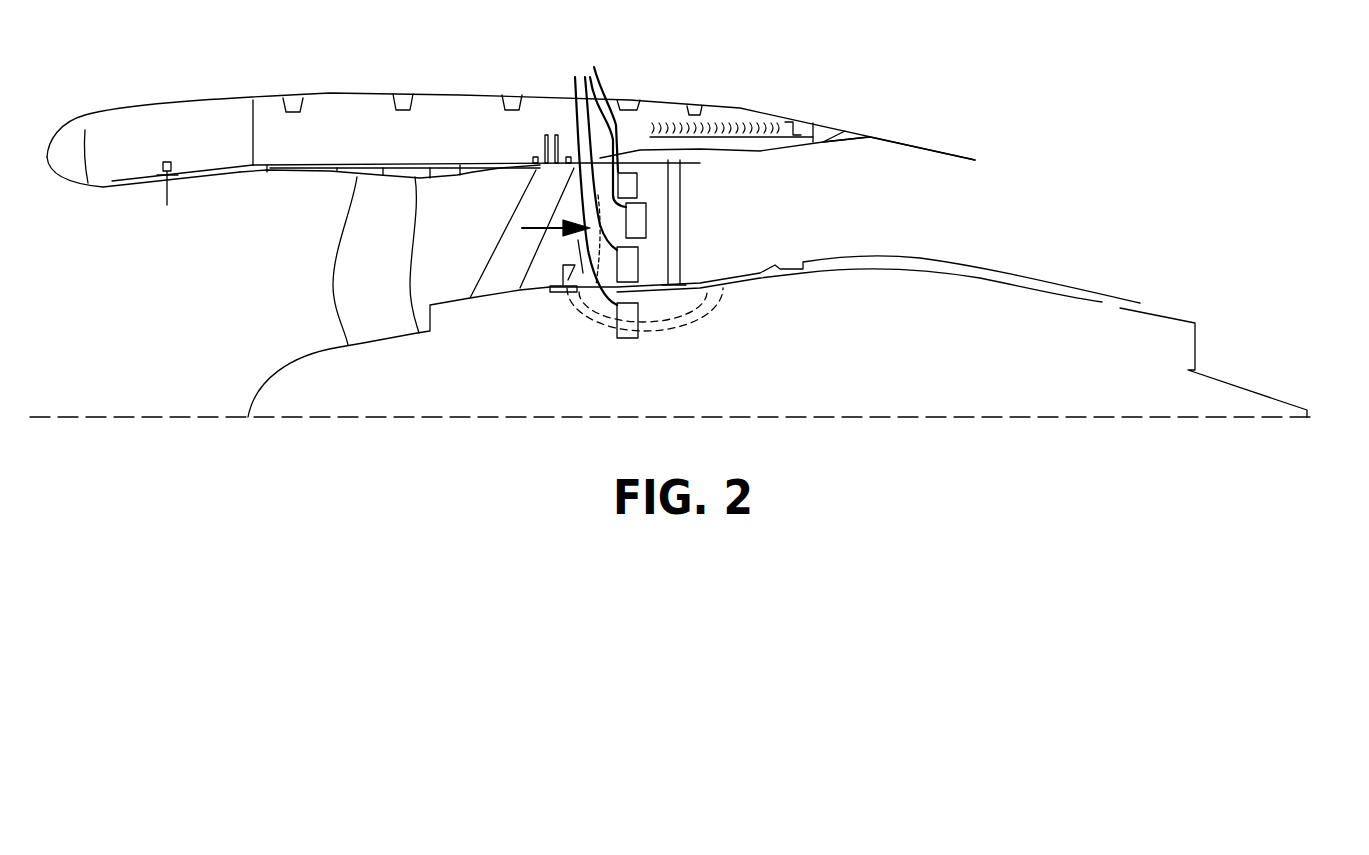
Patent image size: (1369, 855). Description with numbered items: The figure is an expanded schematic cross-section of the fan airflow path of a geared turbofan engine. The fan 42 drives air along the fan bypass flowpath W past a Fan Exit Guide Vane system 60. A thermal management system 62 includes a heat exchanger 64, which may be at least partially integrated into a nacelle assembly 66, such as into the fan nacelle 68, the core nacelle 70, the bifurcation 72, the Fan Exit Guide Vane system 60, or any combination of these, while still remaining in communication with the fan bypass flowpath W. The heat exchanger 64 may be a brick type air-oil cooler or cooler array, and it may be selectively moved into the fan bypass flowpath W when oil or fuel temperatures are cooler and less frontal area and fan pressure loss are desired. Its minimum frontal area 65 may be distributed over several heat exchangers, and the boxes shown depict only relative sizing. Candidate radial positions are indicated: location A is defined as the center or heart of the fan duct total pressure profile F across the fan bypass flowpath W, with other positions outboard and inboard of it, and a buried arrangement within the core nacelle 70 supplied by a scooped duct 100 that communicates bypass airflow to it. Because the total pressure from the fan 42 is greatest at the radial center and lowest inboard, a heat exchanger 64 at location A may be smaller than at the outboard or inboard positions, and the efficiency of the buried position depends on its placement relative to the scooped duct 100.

The fan 42 is at (388, 271).
The Fan Exit Guide Vane system 60 is at (537, 192).
The thermal management system 62 is at (645, 113).
The heat exchanger 64 is at (640, 258).
The minimum frontal area 65 is at (595, 175).
The nacelle assembly 66 is at (827, 83).
The fan nacelle 68 is at (715, 127).
The core nacelle 70 is at (818, 336).
The bifurcation 72 is at (658, 268).
The scooped duct 100 is at (668, 325).
The fan bypass flowpath W is at (553, 235).
The fan duct total pressure profile F is at (583, 255).
The heat exchanger location A is at (1328, 417).